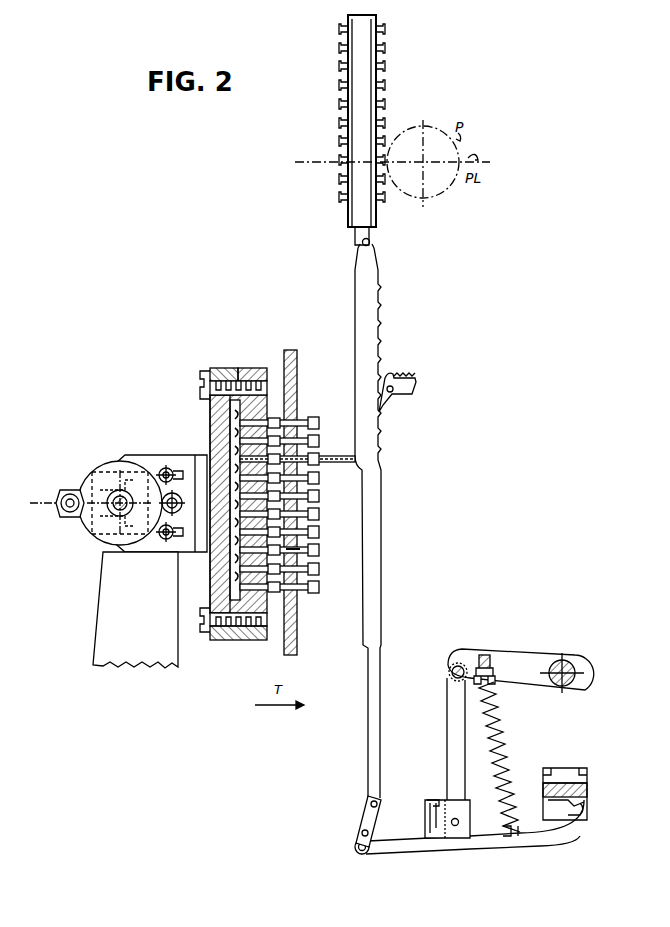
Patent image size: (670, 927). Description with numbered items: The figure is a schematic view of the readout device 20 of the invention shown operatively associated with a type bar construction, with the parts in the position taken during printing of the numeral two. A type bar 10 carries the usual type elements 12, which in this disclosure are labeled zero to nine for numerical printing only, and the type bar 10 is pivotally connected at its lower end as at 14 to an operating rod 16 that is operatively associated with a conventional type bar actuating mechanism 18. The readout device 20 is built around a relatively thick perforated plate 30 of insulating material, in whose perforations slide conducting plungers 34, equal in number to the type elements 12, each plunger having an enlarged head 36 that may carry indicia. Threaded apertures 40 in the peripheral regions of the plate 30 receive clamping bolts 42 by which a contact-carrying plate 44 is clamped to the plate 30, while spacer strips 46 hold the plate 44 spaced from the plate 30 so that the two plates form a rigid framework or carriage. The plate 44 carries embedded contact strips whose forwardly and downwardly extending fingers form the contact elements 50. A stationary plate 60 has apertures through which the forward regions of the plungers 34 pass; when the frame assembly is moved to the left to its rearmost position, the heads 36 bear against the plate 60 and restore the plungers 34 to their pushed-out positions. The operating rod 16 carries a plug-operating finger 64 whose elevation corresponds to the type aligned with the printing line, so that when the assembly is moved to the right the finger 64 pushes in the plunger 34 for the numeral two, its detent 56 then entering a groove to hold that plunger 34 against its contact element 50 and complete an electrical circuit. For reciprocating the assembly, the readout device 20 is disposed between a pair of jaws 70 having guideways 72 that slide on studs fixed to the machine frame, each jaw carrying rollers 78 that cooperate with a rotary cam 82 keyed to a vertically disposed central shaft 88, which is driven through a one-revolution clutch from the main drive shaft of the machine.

The type bar 10 is at (372, 100).
The type elements 12 is at (384, 32).
The pivotal connection 14 is at (370, 242).
The operating rod 16 is at (381, 575).
The type bar actuating mechanism 18 is at (548, 734).
The readout device 20 is at (261, 483).
The perforated plate 30 is at (243, 368).
The plungers 34 is at (313, 417).
The enlarged heads 36 is at (319, 482).
The threaded apertures 40 is at (258, 368).
The clamping bolt 42 is at (200, 376).
The contact-carrying plate 44 is at (222, 368).
The spacer strips 46 is at (230, 368).
The contact elements 50 is at (226, 575).
The detent 56 is at (300, 549).
The stationary plate 60 is at (290, 350).
The plug-operating finger 64 is at (328, 456).
The jaws 70 is at (170, 555).
The guideways 72 is at (160, 470).
The rollers 78 is at (66, 492).
The rotary cam 82 is at (92, 520).
The central shaft 88 is at (110, 475).